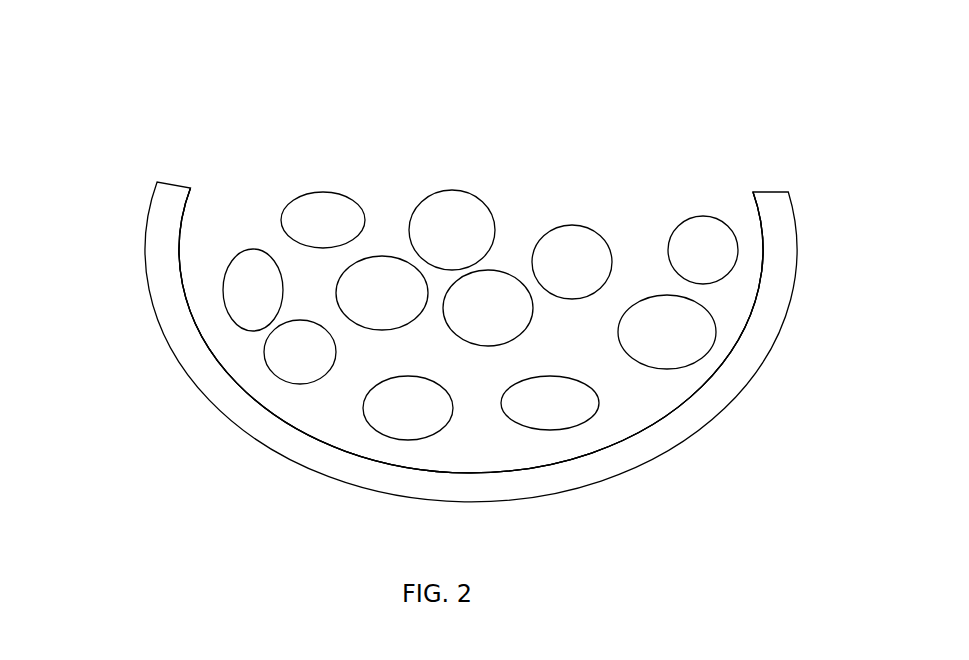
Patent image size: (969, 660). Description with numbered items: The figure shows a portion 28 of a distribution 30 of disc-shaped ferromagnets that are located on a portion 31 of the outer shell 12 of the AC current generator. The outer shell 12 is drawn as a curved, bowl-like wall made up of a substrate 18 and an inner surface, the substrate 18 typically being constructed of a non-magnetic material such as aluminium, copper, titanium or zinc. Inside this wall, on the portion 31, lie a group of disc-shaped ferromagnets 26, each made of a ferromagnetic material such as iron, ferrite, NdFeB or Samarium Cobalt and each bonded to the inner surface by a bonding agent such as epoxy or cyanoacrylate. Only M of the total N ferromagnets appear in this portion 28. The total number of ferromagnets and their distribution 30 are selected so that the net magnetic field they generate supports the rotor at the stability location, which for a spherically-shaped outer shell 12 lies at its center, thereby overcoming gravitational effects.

The outer shell 12 is at (797, 227).
The substrate 18 is at (223, 390).
The plurality of balls 26 is at (518, 178).
The portion of the distribution 28 is at (636, 425).
The distribution 30 is at (500, 288).
The portion of the outer shell 31 is at (577, 353).